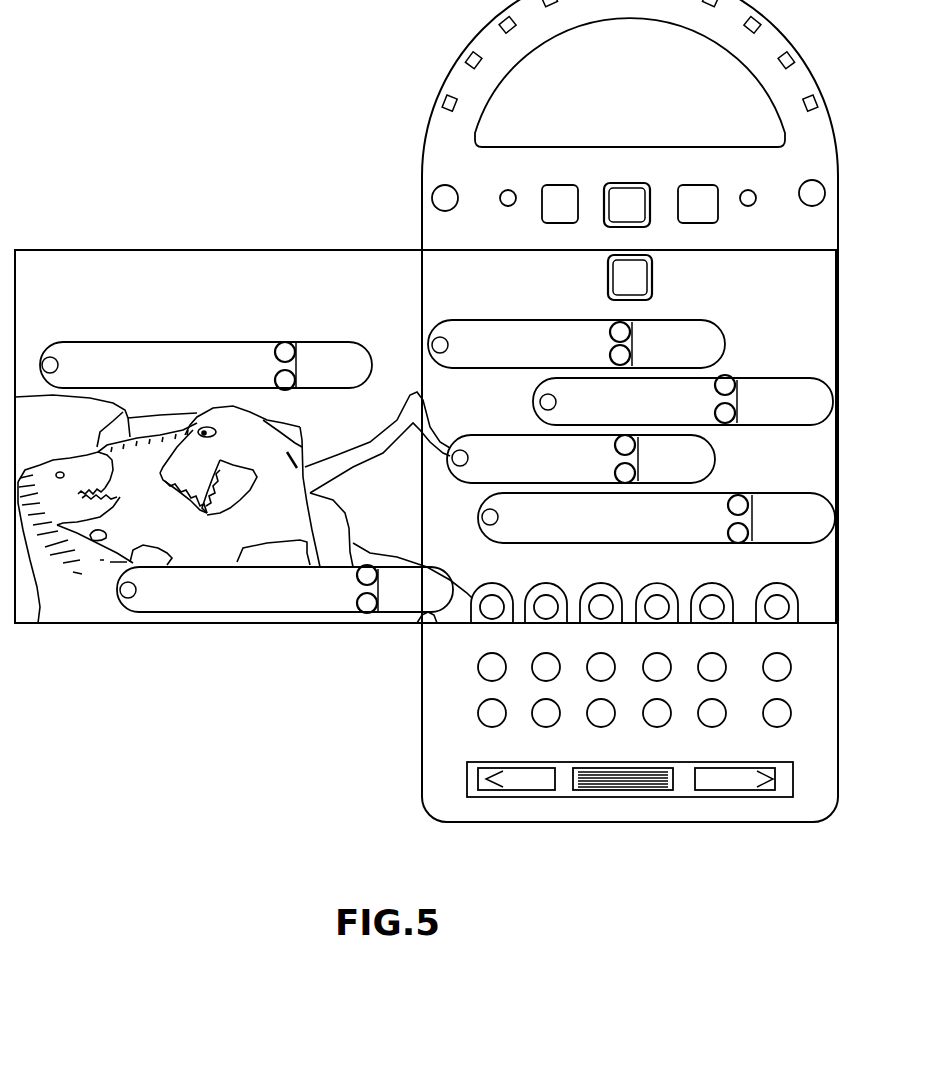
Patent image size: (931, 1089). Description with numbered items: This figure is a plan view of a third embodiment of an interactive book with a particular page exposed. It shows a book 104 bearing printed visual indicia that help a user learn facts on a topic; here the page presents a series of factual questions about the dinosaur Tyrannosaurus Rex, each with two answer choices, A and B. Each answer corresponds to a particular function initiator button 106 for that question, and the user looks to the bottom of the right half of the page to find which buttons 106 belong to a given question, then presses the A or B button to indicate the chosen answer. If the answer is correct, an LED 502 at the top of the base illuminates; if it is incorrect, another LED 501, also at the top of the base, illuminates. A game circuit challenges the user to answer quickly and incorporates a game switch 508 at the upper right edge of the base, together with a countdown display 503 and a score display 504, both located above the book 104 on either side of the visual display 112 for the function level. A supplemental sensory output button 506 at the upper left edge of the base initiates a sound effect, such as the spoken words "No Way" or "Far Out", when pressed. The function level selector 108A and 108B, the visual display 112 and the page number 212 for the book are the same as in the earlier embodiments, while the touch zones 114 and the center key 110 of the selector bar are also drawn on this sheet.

The book 104 is at (259, 250).
The function initiator button 106 is at (532, 660).
The function level selector 108A is at (517, 790).
The function level selector 108B is at (712, 790).
The center key 110 is at (586, 790).
The visual display 112 is at (606, 183).
The touch sensitive selection zones 114 is at (275, 343).
The page number 212 is at (654, 284).
The LED 501 is at (506, 189).
The LED 502 is at (545, 185).
The countdown display 503 is at (750, 189).
The score display 504 is at (713, 185).
The supplemental sensory output button 506 is at (436, 189).
The game switch 508 is at (811, 206).